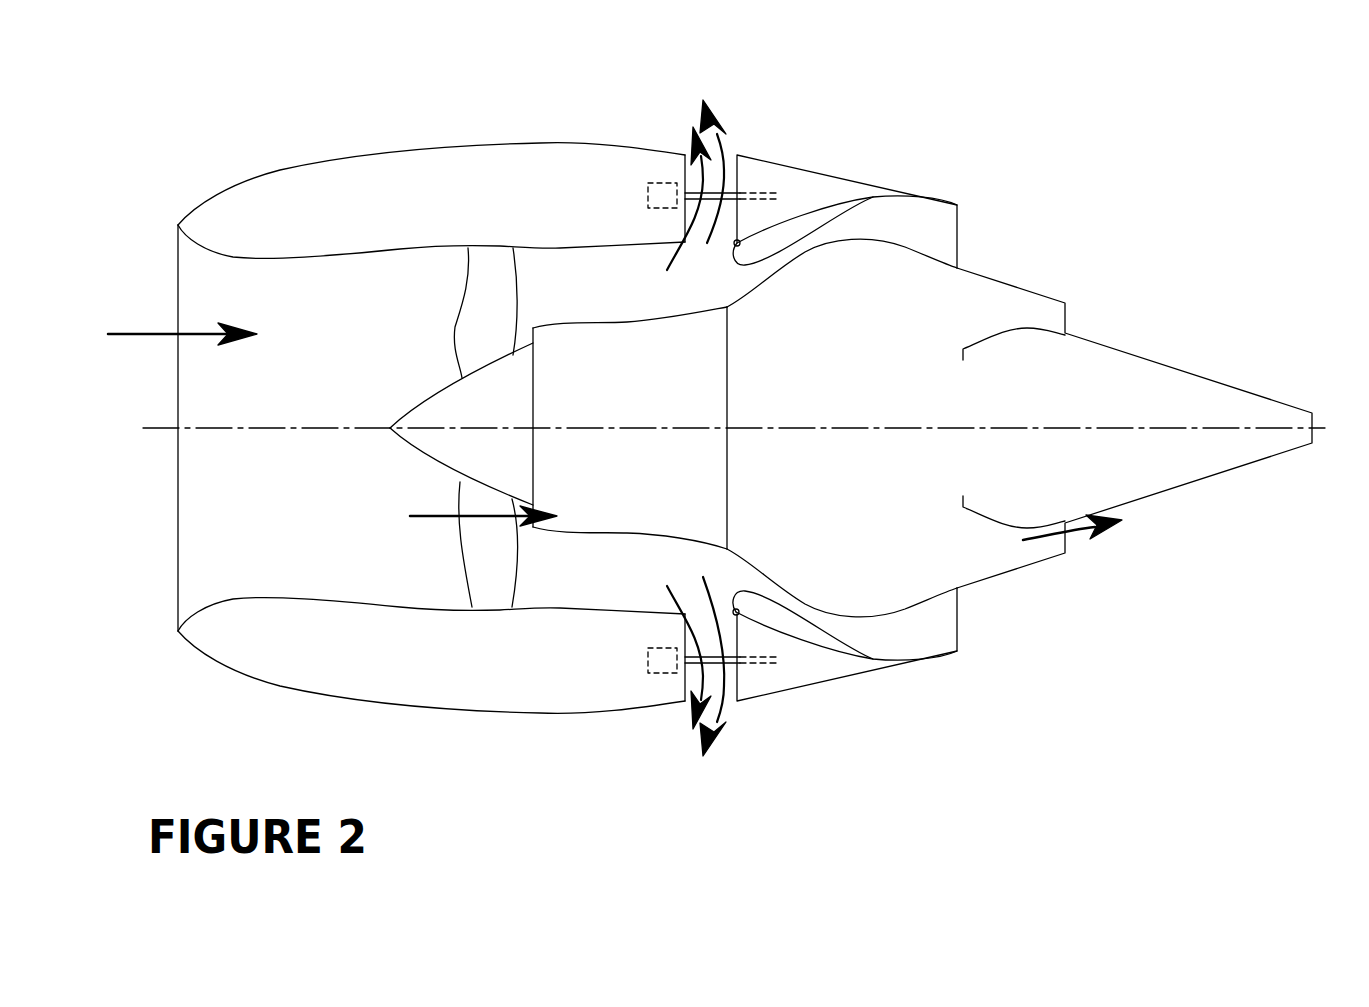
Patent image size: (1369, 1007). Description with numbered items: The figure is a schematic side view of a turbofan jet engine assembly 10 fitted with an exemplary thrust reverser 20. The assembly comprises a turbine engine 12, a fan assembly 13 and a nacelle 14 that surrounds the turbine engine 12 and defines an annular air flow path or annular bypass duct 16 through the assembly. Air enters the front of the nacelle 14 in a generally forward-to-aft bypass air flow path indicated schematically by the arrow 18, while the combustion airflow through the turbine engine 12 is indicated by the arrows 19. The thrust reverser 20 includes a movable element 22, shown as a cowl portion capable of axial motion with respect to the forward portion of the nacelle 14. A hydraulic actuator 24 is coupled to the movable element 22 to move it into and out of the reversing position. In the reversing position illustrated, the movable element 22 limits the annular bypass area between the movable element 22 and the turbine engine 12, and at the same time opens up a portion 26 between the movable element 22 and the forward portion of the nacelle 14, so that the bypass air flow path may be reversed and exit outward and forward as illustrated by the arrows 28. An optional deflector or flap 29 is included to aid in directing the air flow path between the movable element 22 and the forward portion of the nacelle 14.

The turbofan jet engine assembly 10 is at (205, 160).
The turbine engine 12 is at (620, 355).
The fan assembly 13 is at (483, 267).
The nacelle 14 is at (303, 165).
The annular bypass duct 16 is at (547, 281).
The bypass air flow arrow 18 is at (160, 334).
The combustion airflow arrows 19 is at (483, 518).
The thrust reverser 20 is at (788, 98).
The movable element 22 is at (770, 157).
The hydraulic actuator 24 is at (728, 187).
The opened portion 26 is at (693, 180).
The reversed air flow arrows 28 is at (725, 130).
The deflector or flap 29 is at (700, 277).